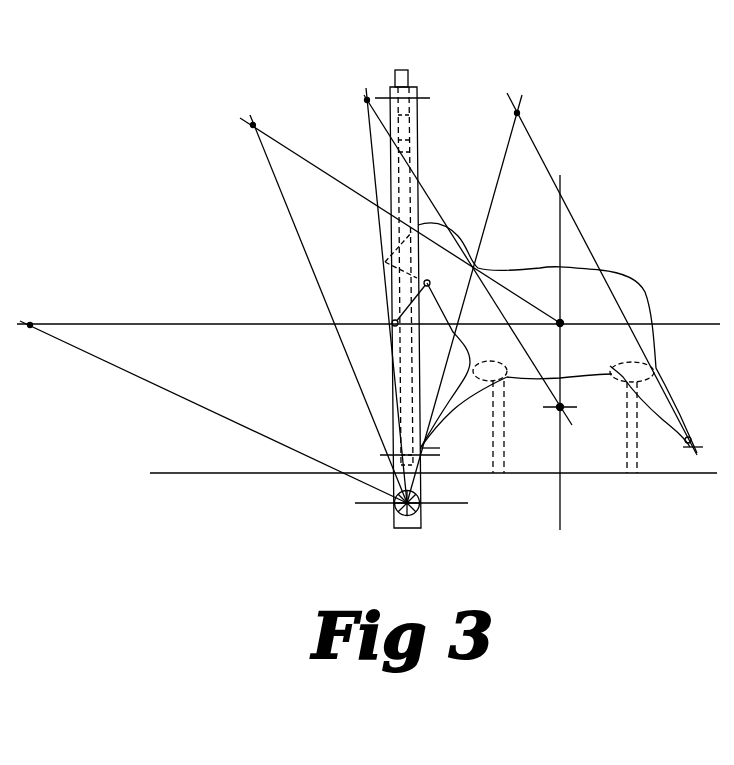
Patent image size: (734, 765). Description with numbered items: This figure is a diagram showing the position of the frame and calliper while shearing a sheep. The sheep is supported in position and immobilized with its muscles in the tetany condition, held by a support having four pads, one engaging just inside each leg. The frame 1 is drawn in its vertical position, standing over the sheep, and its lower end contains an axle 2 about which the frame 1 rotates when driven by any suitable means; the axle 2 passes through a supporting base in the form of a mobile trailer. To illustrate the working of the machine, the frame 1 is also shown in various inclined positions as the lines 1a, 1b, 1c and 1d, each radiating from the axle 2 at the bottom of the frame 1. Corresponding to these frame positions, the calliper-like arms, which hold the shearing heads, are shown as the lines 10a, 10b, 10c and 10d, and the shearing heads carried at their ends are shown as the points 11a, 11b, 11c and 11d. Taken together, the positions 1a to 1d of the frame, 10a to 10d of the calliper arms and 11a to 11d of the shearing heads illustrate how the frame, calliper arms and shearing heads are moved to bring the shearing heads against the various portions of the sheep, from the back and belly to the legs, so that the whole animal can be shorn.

The frame 1 is at (407, 127).
The axle 2 is at (392, 512).
The frame position 1a is at (218, 413).
The frame position 1b is at (285, 217).
The frame position 1c is at (360, 132).
The frame position 1d is at (508, 150).
The calliper arm position 10a is at (227, 325).
The calliper arm position 10b is at (357, 188).
The calliper arm position 10c is at (430, 207).
The calliper arm position 10d is at (578, 228).
The shearing head position 11a is at (392, 306).
The shearing head position 11b is at (562, 353).
The shearing head position 11c is at (562, 400).
The shearing head position 11d is at (680, 413).